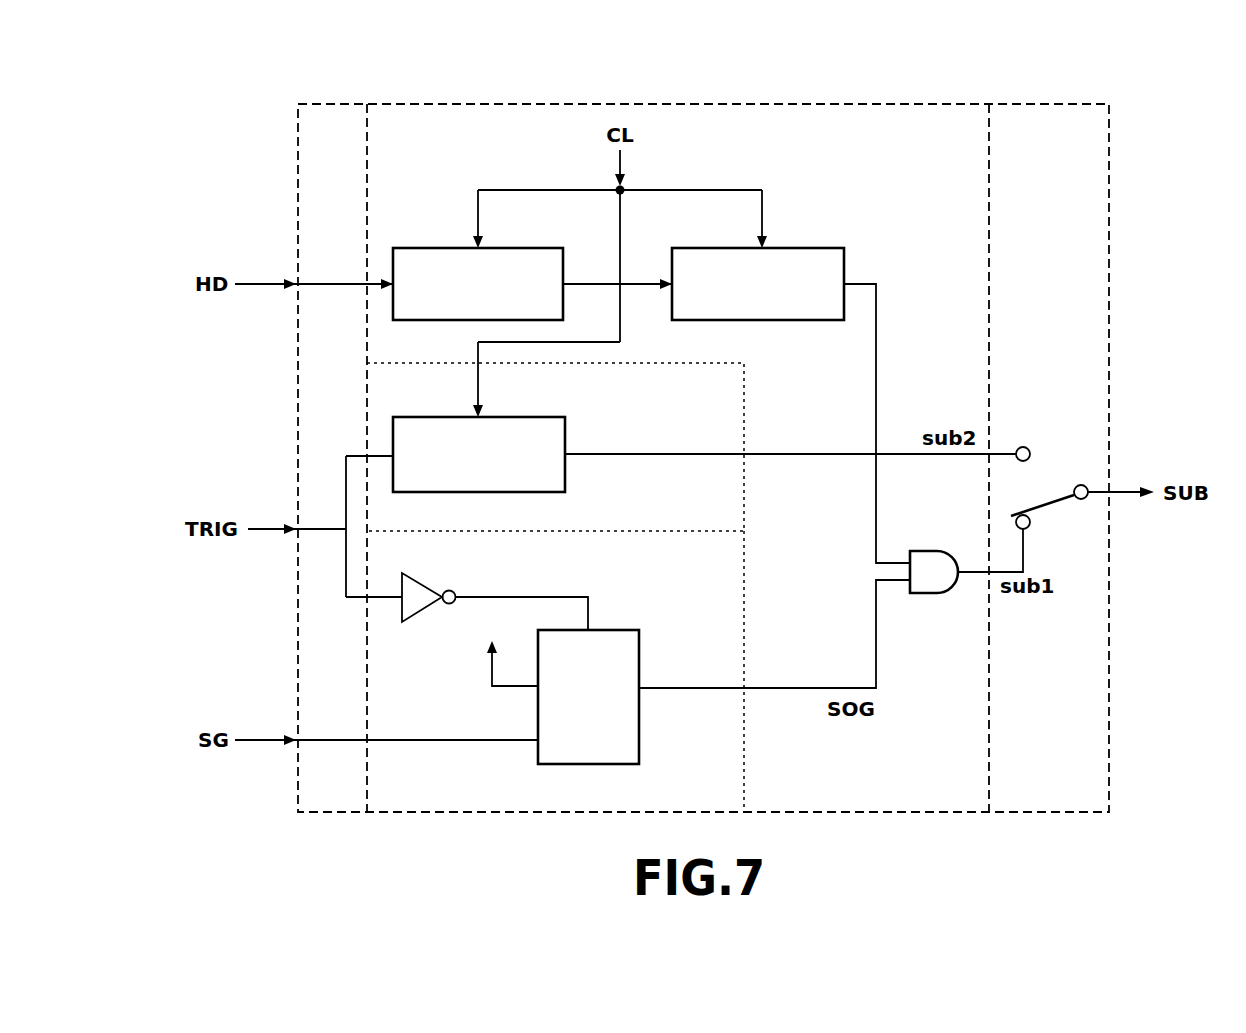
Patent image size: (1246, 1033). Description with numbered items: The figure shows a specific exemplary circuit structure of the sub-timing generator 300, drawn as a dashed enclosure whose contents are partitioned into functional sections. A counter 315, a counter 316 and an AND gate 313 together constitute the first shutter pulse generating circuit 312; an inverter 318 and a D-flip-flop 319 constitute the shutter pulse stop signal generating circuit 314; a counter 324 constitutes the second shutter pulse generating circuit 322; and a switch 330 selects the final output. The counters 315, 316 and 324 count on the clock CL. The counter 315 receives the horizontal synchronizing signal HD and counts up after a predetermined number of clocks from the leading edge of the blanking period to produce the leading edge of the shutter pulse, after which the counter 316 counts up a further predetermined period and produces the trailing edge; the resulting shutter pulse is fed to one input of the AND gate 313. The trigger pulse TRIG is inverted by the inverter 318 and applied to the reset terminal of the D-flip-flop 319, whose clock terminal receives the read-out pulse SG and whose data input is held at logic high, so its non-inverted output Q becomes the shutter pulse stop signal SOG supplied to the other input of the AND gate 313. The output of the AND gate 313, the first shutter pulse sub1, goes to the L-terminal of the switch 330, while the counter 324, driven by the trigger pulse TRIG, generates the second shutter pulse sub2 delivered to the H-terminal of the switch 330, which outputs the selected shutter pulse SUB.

The sub-timing generator 300 is at (646, 94).
The first shutter pulse generating circuit 312 is at (989, 242).
The AND gate 313 is at (928, 548).
The shutter pulse stop signal generating circuit 314 is at (744, 580).
The counter 315 is at (522, 248).
The counter 316 is at (812, 248).
The inverter 318 is at (420, 575).
The D-flip-flop 319 is at (639, 636).
The second shutter pulse generating circuit 322 is at (744, 390).
The counter 324 is at (530, 417).
The switch 330 is at (1070, 513).